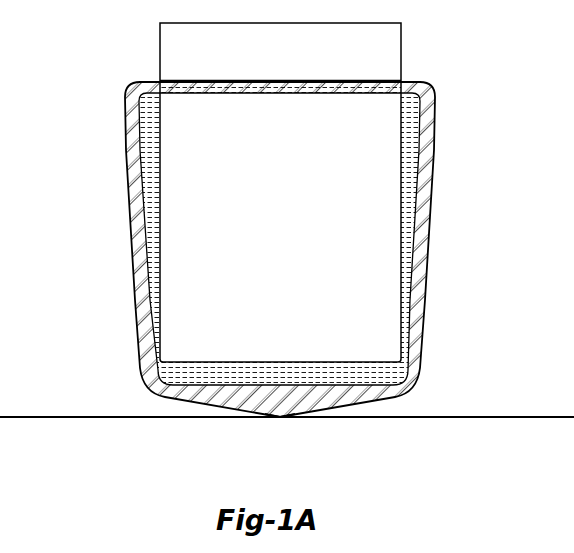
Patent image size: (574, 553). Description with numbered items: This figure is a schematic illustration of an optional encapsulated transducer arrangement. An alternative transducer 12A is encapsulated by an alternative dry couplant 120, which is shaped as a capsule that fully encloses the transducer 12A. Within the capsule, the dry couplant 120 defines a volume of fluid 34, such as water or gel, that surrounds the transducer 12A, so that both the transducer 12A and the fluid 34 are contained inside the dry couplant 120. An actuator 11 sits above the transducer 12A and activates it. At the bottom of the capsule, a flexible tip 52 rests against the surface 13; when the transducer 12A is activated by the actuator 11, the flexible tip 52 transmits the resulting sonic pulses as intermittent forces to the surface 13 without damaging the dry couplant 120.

The actuator 11 is at (286, 60).
The alternative transducer 12A is at (290, 222).
The surface 13 is at (36, 413).
The volume of fluid 34 is at (410, 120).
The flexible tip 52 is at (280, 418).
The dry couplant 120 is at (129, 80).